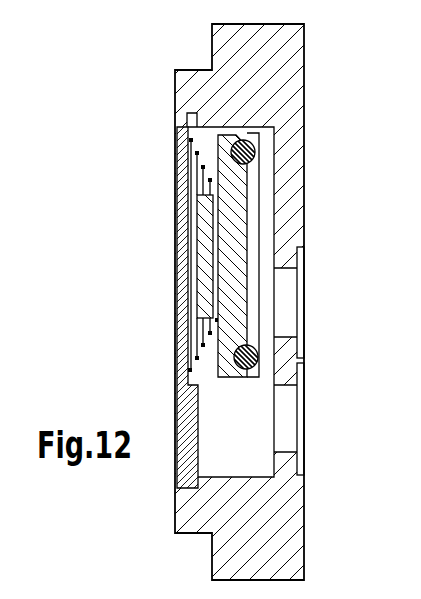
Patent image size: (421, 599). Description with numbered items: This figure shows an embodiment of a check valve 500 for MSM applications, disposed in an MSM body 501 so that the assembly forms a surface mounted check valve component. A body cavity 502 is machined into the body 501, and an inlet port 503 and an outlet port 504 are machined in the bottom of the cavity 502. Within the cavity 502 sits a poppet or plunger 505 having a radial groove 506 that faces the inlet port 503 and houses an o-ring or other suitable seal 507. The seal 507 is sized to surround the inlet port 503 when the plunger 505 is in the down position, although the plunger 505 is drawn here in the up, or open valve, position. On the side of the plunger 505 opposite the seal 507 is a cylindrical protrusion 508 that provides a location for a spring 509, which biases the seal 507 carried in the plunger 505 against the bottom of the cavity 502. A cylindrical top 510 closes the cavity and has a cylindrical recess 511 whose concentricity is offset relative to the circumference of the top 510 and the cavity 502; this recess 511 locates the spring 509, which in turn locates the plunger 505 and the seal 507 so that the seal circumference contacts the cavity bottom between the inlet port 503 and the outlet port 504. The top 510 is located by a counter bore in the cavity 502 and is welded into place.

The check valve 500 is at (148, 273).
The MSM body 501 is at (263, 32).
The body cavity 502 is at (266, 133).
The inlet port 503 is at (300, 297).
The outlet port 504 is at (300, 418).
The plunger 505 is at (244, 199).
The radial groove 506 is at (192, 138).
The seal 507 is at (256, 151).
The cylindrical protrusion 508 is at (200, 280).
The spring 509 is at (190, 165).
The cylindrical top 510 is at (190, 447).
The cylindrical recess 511 is at (197, 381).